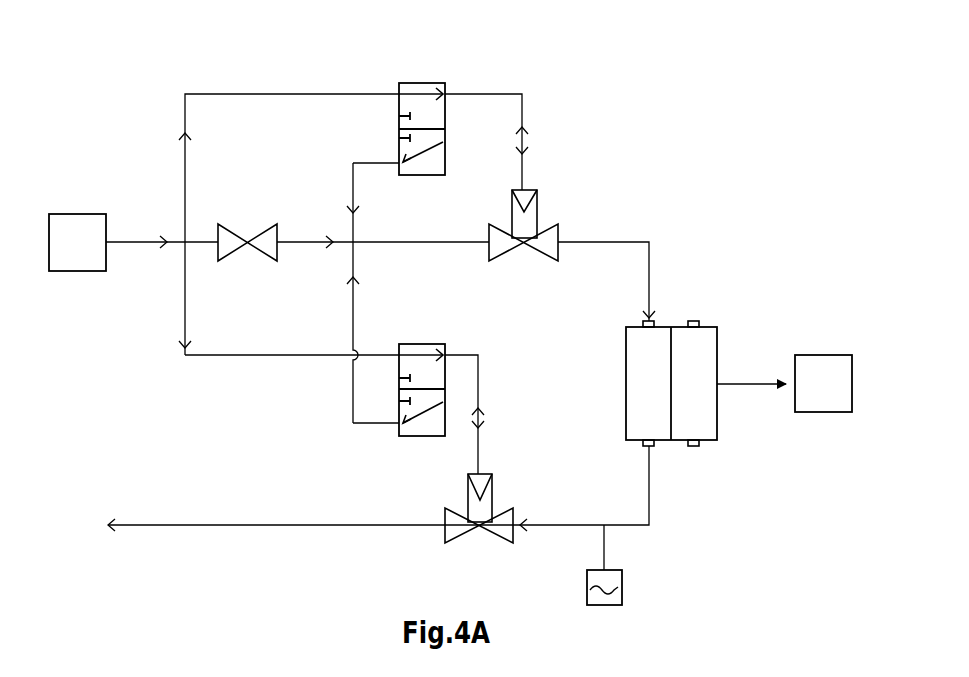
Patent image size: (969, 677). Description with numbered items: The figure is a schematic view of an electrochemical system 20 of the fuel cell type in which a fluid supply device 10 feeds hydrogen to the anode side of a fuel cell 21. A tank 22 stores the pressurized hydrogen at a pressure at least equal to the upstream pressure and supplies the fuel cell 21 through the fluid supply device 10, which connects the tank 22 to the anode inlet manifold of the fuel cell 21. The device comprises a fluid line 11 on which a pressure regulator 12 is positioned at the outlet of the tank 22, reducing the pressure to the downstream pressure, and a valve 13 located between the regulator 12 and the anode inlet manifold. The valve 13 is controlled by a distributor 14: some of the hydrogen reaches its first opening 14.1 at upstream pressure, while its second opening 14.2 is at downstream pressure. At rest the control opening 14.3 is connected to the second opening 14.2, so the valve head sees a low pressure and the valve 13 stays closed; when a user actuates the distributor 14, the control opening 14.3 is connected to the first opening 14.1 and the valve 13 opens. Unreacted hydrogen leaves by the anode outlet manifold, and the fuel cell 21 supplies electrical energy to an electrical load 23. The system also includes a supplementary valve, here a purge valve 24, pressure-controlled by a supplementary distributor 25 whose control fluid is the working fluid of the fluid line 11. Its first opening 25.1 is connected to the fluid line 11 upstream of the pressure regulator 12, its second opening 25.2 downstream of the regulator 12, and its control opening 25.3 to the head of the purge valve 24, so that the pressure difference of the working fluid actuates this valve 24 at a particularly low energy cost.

The fluid supply device 10 is at (576, 121).
The fluid line 11 is at (411, 245).
The pressure regulator 12 is at (259, 262).
The valve 13 is at (537, 262).
The distributor 14 is at (452, 82).
The first opening 14.1 is at (399, 86).
The second opening 14.2 is at (377, 153).
The control opening 14.3 is at (486, 142).
The electrochemical system 20 is at (100, 95).
The fuel cell 21 is at (695, 282).
The tank 22 is at (78, 273).
The electrical load 23 is at (826, 355).
The purge valve 24 is at (498, 544).
The supplementary distributor 25 is at (449, 344).
The first opening 25.1 is at (399, 367).
The second opening 25.2 is at (377, 438).
The control opening 25.3 is at (471, 414).